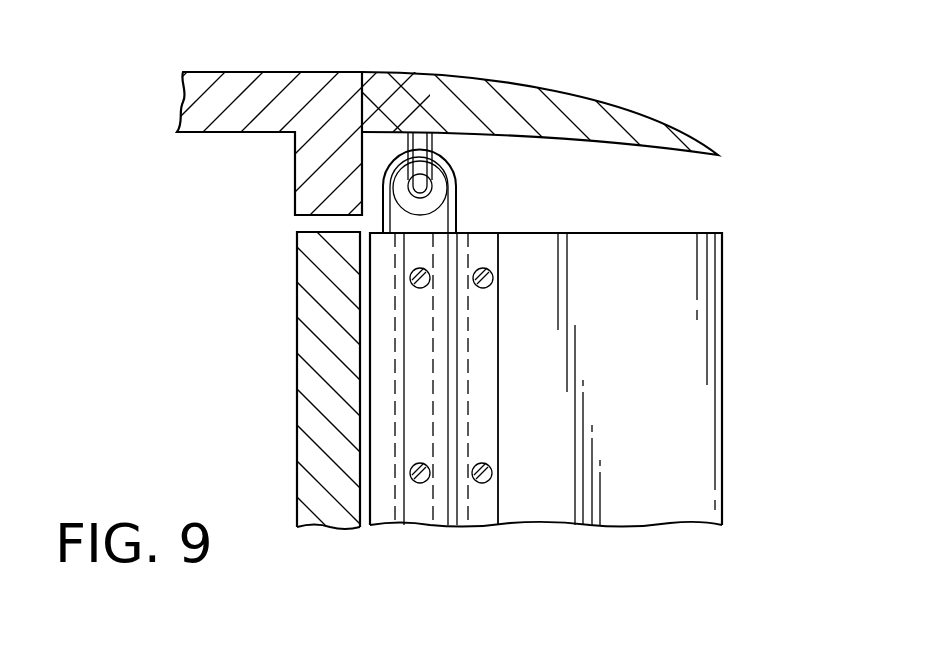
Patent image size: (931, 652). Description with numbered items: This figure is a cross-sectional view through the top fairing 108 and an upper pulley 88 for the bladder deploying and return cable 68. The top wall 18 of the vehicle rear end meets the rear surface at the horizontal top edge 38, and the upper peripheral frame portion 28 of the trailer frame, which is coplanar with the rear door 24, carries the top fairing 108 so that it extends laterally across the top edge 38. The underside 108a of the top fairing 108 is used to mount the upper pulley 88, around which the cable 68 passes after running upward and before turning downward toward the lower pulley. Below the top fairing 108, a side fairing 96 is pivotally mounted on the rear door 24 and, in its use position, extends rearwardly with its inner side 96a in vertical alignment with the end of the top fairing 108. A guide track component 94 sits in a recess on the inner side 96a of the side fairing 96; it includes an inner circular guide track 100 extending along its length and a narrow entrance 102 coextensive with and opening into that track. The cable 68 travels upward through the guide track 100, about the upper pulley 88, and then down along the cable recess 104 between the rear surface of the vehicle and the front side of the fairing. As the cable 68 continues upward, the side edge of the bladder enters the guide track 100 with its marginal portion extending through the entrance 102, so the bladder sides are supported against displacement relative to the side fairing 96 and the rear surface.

The top wall 18 is at (290, 70).
The top edge 38 is at (362, 72).
The upper peripheral frame portion 28 is at (363, 155).
The top fairing 108 is at (606, 86).
The underside of top fairing 108a is at (590, 140).
The upper pulley 88 is at (464, 166).
The cable 68 is at (455, 215).
The rear door 24 is at (297, 337).
The cable recess 104 is at (395, 405).
The side fairing 96 is at (736, 385).
The inner side of side fairing 96a is at (688, 440).
The entrance 102 is at (450, 520).
The guide track 100 is at (468, 492).
The guide track component 94 is at (508, 476).